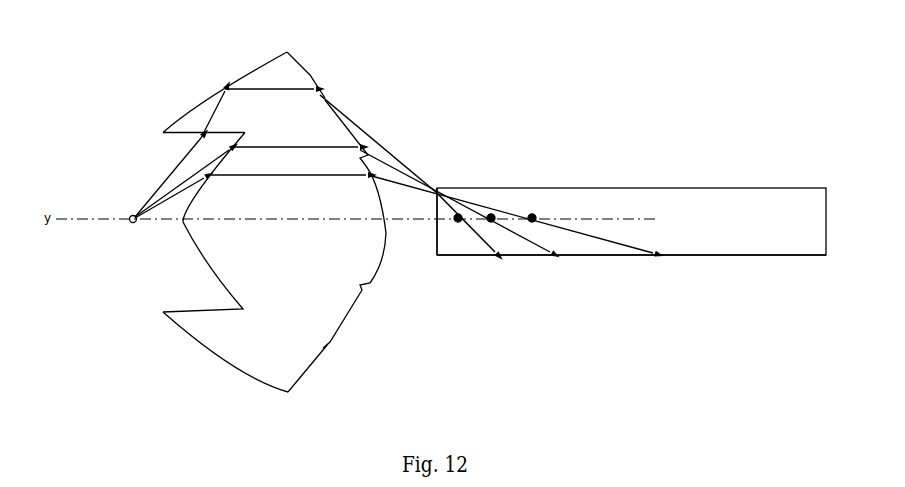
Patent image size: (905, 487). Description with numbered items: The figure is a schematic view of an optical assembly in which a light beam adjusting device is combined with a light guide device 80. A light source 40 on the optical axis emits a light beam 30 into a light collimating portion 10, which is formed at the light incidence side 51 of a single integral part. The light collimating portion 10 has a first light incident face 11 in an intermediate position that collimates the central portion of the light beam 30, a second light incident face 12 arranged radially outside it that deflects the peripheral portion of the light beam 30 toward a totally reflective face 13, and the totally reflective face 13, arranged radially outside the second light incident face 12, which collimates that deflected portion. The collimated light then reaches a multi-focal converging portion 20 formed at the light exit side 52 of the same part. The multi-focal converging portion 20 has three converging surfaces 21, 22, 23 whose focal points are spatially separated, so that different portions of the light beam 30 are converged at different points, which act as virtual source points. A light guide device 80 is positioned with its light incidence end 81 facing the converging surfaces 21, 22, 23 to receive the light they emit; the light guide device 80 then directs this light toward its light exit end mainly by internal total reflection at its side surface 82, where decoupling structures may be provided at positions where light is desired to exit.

The light collimating portion 10 is at (274, 220).
The first light incident face 11 is at (197, 255).
The second light incident face 12 is at (182, 132).
The totally reflective face 13 is at (242, 75).
The multi-focal converging portion 20 is at (470, 147).
The converging surface 21 is at (380, 197).
The converging surface 22 is at (347, 128).
The converging surface 23 is at (310, 75).
The light beam 30 is at (158, 187).
The light source 40 is at (130, 225).
The light incidence side 51 is at (152, 300).
The light exit side 52 is at (385, 320).
The light guide device 80 is at (615, 225).
The light incidence end 81 is at (436, 245).
The side surface 82 is at (607, 255).